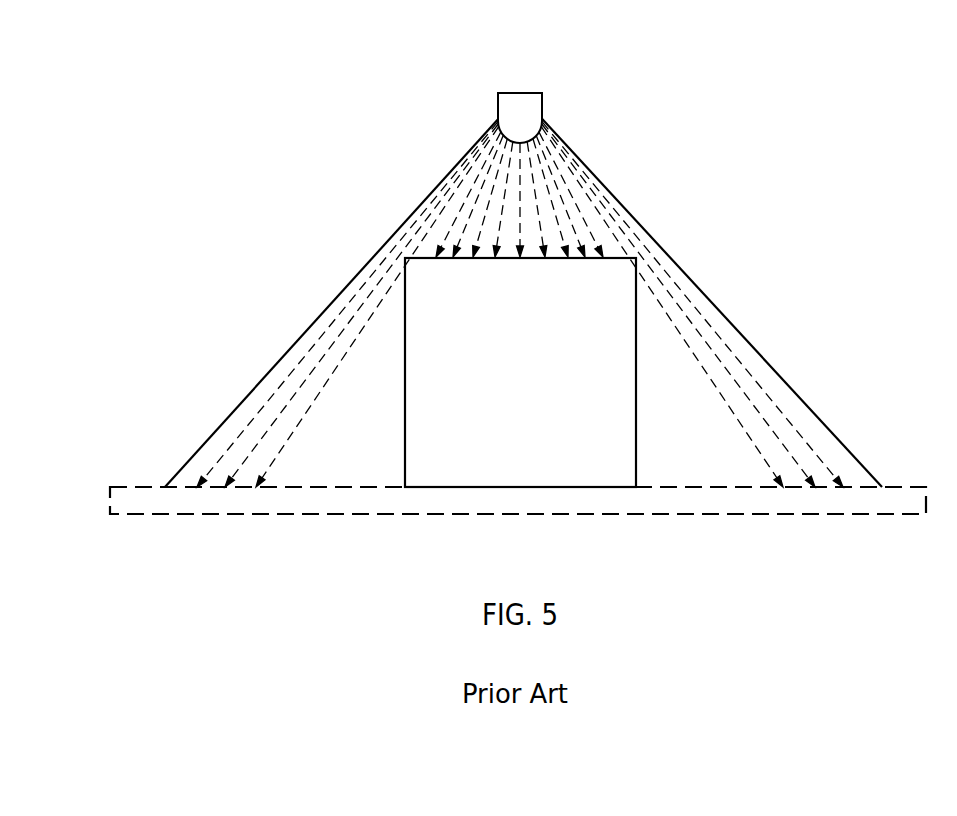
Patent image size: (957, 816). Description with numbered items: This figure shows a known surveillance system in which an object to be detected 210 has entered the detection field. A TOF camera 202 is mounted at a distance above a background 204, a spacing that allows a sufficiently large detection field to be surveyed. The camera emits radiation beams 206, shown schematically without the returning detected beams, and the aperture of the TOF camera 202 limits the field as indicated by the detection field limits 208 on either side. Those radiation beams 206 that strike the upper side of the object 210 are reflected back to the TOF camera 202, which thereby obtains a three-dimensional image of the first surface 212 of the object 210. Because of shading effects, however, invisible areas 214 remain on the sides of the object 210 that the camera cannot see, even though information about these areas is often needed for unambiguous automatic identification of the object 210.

The TOF camera 202 is at (522, 84).
The background 204 is at (888, 520).
The radiation beams 206 is at (538, 194).
The detection field limits 208 is at (192, 431).
The object to be detected 210 is at (463, 435).
The first surface 212 is at (484, 263).
The invisible areas 214 is at (391, 360).